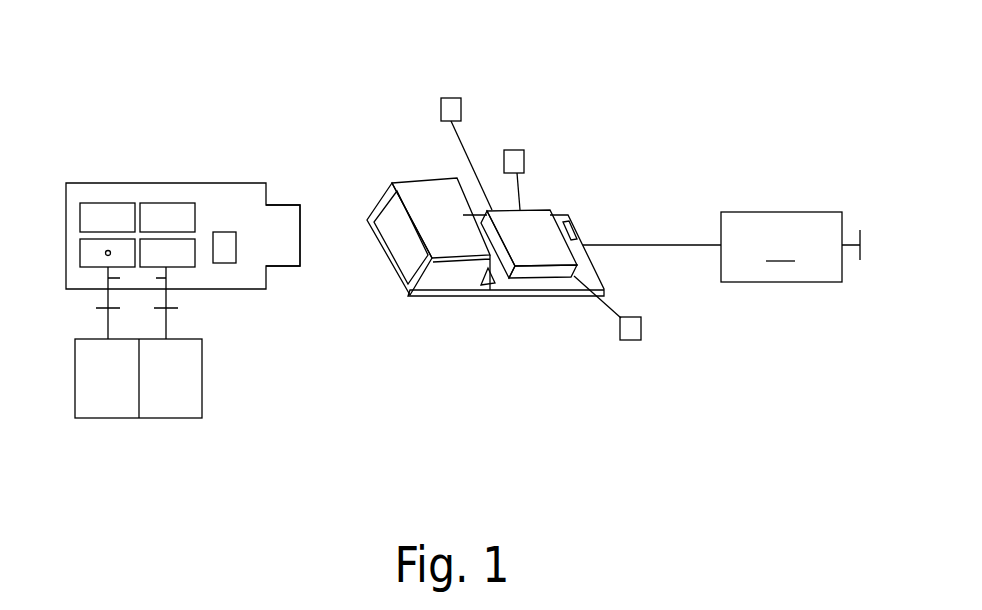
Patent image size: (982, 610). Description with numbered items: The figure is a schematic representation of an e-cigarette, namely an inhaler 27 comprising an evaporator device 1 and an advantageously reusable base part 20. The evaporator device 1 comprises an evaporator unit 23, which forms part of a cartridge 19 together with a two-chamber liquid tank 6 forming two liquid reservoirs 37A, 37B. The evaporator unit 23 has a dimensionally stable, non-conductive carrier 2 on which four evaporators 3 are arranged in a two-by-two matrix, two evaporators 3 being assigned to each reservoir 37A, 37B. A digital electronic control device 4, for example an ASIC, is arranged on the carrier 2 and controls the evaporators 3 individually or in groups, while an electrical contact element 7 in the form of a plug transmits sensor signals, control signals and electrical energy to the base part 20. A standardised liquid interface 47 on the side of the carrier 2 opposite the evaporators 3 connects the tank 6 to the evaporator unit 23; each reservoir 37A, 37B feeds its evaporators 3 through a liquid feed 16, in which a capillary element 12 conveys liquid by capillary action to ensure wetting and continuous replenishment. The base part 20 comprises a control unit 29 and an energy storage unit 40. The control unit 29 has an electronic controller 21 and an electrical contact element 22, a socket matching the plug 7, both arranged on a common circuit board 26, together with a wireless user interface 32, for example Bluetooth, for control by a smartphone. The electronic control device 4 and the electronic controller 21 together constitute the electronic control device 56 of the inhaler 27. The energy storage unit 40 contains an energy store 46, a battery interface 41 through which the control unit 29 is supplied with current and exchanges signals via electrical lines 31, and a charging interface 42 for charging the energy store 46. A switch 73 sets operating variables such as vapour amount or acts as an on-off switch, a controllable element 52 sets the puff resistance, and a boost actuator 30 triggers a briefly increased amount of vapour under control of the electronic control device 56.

The evaporator device 1 is at (169, 176).
The evaporator unit 23 is at (108, 178).
The evaporator 3 is at (175, 252).
The carrier 2 is at (228, 213).
The electrical contact element 7 is at (280, 198).
The electronic control device 4 is at (227, 265).
The electronic control device of the inhaler 56 is at (420, 224).
The capillary element 12 is at (137, 278).
The liquid feed 16 is at (100, 325).
The liquid interface 47 is at (178, 305).
The liquid reservoir 37A is at (112, 398).
The liquid reservoir 37B is at (175, 373).
The liquid tank 6 is at (180, 431).
The cartridge 19 is at (180, 431).
The base part 20 is at (626, 275).
The inhaler 27 is at (511, 275).
The circuit board 26 is at (520, 298).
The electrical contact element 22 is at (415, 252).
The control unit 29 is at (490, 305).
The user interface 32 is at (573, 226).
The boost actuator 30 is at (449, 108).
The controllable element 52 is at (512, 160).
The electronic controller 21 is at (535, 224).
The switch 73 is at (629, 341).
The electrical lines 31 is at (661, 247).
The energy storage unit 40 is at (754, 267).
The energy store 46 is at (780, 248).
The battery interface 41 is at (719, 244).
The charging interface 42 is at (863, 234).